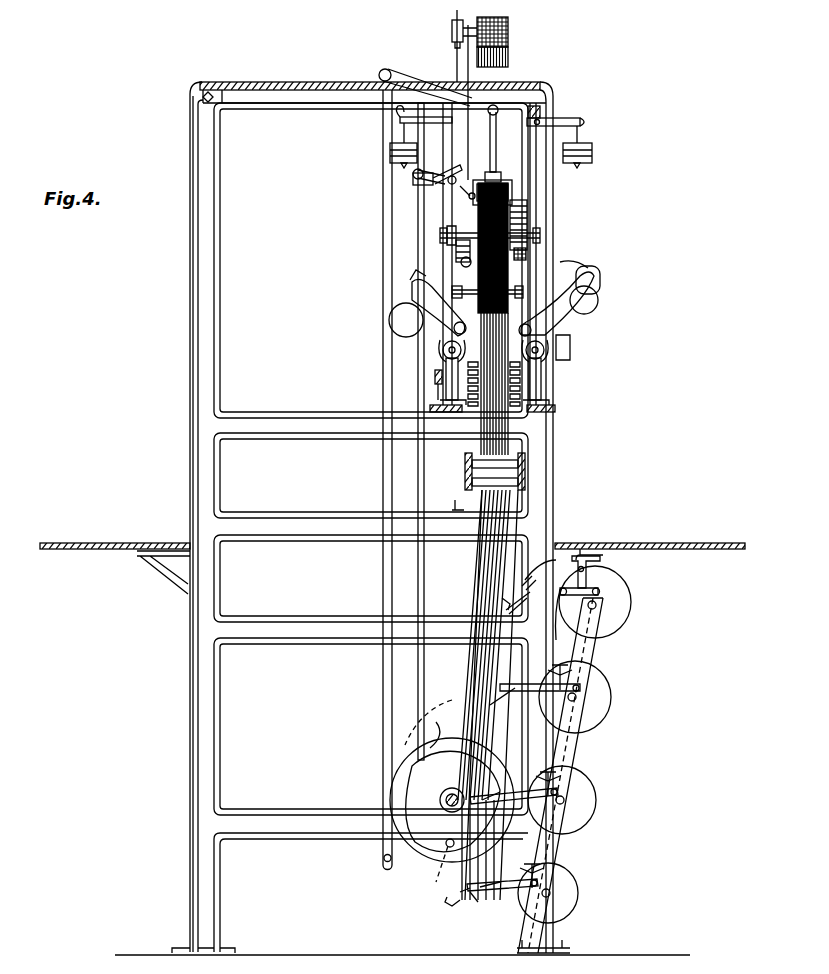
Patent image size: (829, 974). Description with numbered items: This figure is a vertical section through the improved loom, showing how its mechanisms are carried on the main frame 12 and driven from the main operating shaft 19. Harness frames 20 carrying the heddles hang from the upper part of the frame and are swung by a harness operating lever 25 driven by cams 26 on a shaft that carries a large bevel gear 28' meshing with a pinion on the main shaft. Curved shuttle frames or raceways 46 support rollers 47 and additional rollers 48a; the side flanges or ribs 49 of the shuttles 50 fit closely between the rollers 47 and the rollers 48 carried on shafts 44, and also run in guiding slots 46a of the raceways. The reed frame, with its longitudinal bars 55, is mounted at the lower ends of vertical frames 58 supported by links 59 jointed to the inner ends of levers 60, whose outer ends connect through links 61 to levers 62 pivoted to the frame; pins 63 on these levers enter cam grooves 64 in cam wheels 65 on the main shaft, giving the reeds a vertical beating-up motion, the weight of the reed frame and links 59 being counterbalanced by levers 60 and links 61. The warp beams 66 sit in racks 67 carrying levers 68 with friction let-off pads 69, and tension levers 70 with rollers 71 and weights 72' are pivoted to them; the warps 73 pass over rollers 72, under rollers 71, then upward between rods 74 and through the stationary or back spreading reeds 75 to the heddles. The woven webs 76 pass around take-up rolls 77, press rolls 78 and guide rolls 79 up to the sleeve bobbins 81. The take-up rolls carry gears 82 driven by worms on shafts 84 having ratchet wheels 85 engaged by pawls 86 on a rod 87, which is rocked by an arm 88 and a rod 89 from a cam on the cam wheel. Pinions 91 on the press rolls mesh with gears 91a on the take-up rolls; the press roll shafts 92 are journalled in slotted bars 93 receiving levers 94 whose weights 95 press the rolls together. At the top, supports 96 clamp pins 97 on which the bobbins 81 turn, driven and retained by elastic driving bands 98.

The main frame 12 is at (297, 82).
The main operating shaft 19 is at (440, 800).
The harness frames 20 is at (520, 396).
The harness operating lever 25 is at (517, 650).
The cams 26 is at (510, 732).
The large bevel gear 28' is at (433, 717).
The shafts 44 is at (444, 358).
The shuttle frames or raceways 46 is at (430, 322).
The guiding slots 46a is at (410, 280).
The rollers 47 is at (462, 322).
The rollers 48 is at (446, 368).
The additional rollers 48a is at (389, 322).
The side flanges or ribs 49 is at (575, 270).
The shuttles 50 is at (600, 280).
The longitudinal bars 55 is at (446, 388).
The vertical frames 58 is at (452, 292).
The links 59 is at (536, 122).
The levers 60 is at (398, 68).
The links 61 is at (383, 208).
The levers 62 is at (386, 870).
The pins 63 is at (446, 850).
The cam grooves 64 is at (414, 748).
The cam wheels 65 is at (400, 776).
The warp beams 66 is at (617, 608).
The racks 67 is at (570, 835).
The levers 68 is at (600, 590).
The friction let-off pads 69 is at (600, 570).
The tension levers 70 is at (524, 604).
The rollers 71 is at (548, 570).
The rollers 72 is at (510, 755).
The weights 72' is at (456, 759).
The warps 73 is at (482, 575).
The rods 74 is at (520, 482).
The stationary or back spreading reeds 75 is at (520, 460).
The woven webs 76 is at (508, 56).
The take-up rolls 77 is at (527, 212).
The press rolls 78 is at (466, 262).
The guide rolls 79 is at (447, 236).
The sleeve bobbins 81 is at (508, 28).
The gears 82 is at (447, 238).
The shafts 84 is at (460, 188).
The ratchet wheels 85 is at (472, 200).
The pawls 86 is at (446, 160).
The rod 87 is at (448, 178).
The arm 88 is at (418, 182).
The rod 89 is at (418, 228).
The pinions 91 is at (470, 262).
The gears 91a is at (512, 192).
The shafts 92 is at (526, 252).
The bars 93 is at (490, 136).
The levers 94 is at (400, 120).
The weights 95 is at (390, 151).
The supports 96 is at (455, 46).
The pins 97 is at (452, 28).
The elastic driving bands 98 is at (468, 62).